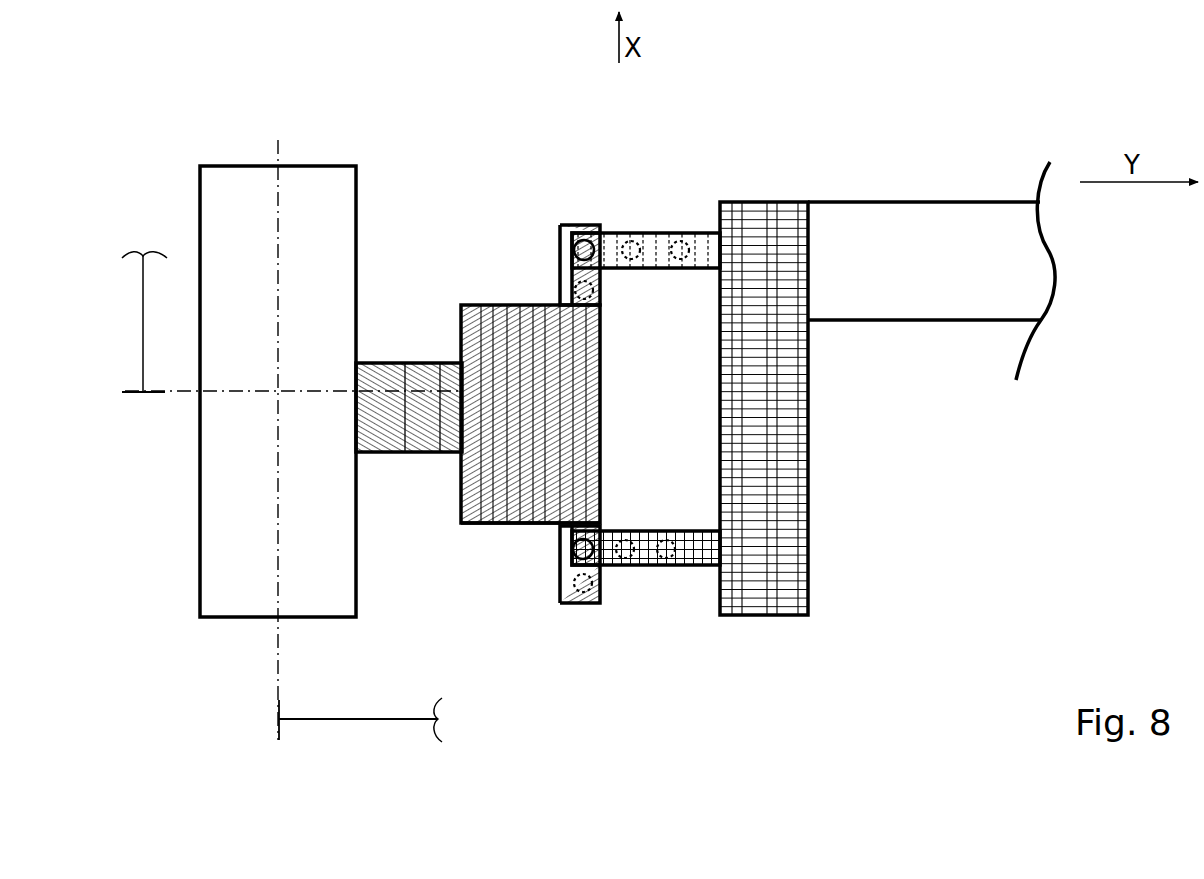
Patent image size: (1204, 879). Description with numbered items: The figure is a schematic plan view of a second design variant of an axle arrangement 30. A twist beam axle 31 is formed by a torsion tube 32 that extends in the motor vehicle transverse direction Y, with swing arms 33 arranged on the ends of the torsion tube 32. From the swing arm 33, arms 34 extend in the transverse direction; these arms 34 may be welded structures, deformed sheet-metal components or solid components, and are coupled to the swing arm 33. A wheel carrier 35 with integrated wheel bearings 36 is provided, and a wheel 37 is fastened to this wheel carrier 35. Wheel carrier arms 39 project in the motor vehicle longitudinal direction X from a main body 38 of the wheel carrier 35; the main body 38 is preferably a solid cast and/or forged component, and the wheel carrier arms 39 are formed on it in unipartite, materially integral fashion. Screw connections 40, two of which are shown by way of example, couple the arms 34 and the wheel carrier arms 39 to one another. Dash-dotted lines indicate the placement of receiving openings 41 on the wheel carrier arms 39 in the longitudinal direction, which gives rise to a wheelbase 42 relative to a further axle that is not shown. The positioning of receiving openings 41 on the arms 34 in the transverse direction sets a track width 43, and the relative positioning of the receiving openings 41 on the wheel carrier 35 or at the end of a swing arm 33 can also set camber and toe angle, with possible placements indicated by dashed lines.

The axle arrangement 30 is at (457, 93).
The twist beam axle 31 is at (862, 198).
The torsion tube 32 is at (952, 222).
The swing arm 33 is at (795, 588).
The arm 34 is at (702, 232).
The wheel carrier 35 is at (490, 303).
The wheel bearing 36 is at (418, 378).
The wheel 37 is at (258, 187).
The main body 38 is at (500, 528).
The wheel carrier arm 39 is at (573, 225).
The screw connection 40 is at (576, 242).
The receiving opening 41 is at (678, 245).
The wheelbase 42 is at (143, 325).
The track width 43 is at (375, 719).